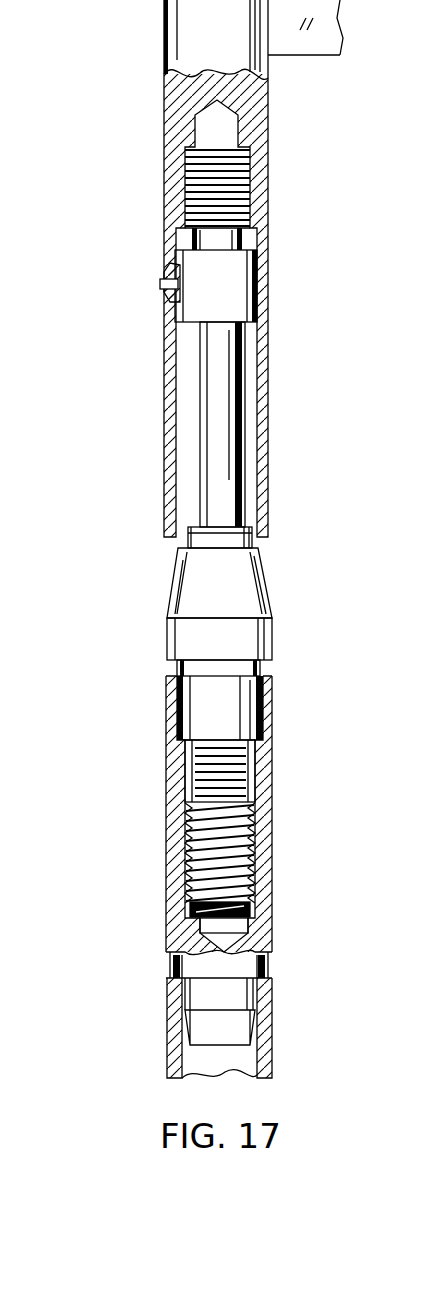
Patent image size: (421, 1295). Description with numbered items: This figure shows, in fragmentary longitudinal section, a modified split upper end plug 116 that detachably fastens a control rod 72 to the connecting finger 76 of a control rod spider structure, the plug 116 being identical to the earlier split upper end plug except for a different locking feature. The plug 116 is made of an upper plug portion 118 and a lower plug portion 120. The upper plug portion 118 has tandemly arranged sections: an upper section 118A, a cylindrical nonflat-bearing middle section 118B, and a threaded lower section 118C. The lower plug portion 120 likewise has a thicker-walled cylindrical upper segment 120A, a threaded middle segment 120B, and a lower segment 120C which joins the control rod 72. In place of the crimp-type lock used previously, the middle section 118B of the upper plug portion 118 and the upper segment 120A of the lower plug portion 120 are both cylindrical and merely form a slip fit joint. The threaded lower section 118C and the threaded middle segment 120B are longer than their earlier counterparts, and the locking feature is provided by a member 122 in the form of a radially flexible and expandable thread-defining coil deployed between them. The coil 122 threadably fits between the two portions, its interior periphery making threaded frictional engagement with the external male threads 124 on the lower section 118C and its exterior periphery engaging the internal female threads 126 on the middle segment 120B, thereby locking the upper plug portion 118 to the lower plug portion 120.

The connecting finger 76 is at (158, 64).
The modified split upper end plug 116 is at (150, 548).
The upper plug portion 118 is at (286, 588).
The upper section of upper plug portion 118A is at (262, 277).
The middle section 118B is at (165, 680).
The threaded lower section 118C is at (185, 784).
The lower plug portion 120 is at (290, 814).
The cylindrical upper segment 120A is at (166, 722).
The threaded middle segment 120B is at (168, 940).
The lower segment of lower plug portion 120C is at (275, 988).
The thread-defining coil 122 is at (255, 870).
The external male threads 124 is at (255, 762).
The internal female threads 126 is at (262, 906).
The control rod 72 is at (160, 1041).